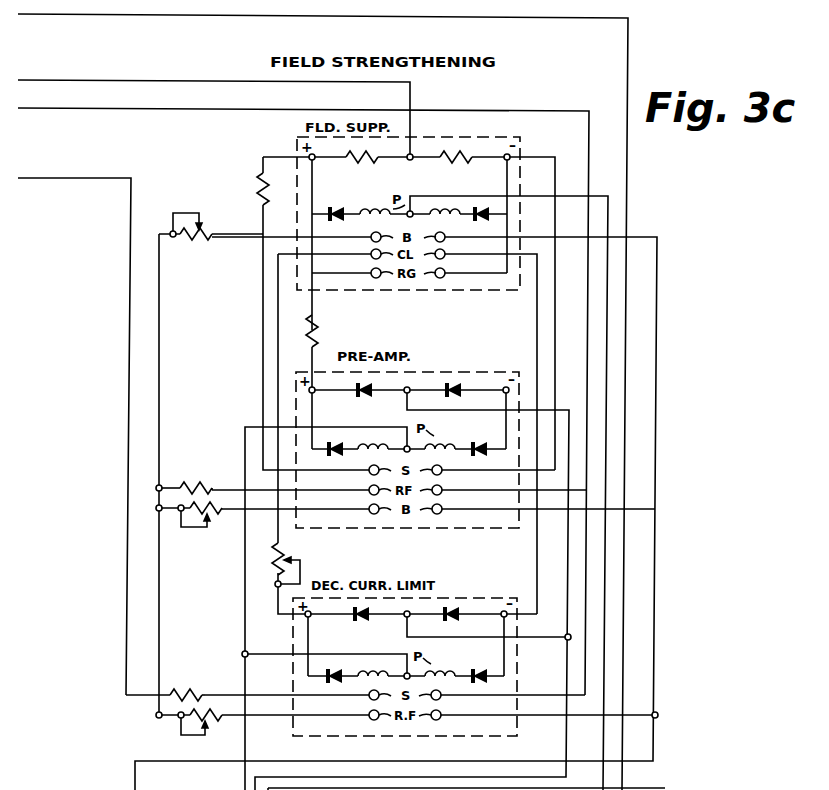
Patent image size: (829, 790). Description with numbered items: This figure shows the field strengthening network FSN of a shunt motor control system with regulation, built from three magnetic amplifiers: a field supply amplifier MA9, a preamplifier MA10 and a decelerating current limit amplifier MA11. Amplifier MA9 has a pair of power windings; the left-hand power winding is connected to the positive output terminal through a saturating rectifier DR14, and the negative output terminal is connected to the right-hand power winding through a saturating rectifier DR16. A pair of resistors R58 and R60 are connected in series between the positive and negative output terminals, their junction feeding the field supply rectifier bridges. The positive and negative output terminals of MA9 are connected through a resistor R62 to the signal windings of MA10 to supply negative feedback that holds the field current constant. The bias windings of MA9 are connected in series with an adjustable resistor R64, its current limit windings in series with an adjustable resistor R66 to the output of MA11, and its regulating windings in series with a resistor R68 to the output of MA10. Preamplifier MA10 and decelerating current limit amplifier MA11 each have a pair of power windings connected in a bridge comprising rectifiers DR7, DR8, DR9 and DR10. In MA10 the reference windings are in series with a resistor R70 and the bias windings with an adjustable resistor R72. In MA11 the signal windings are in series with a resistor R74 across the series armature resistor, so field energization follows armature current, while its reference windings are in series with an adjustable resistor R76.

The resistor R58 is at (357, 166).
The resistor R60 is at (455, 166).
The resistor R62 is at (255, 191).
The adjustable resistor R64 is at (197, 243).
The adjustable resistor R66 is at (295, 551).
The resistor R68 is at (319, 331).
The resistor R70 is at (202, 471).
The adjustable resistor R72 is at (213, 530).
The resistor R74 is at (182, 672).
The adjustable resistor R76 is at (211, 737).
The saturating rectifier DR14 is at (347, 200).
The saturating rectifier DR16 is at (487, 220).
The rectifier DR9 is at (362, 398).
The rectifier DR8 is at (453, 398).
The rectifier DR7 is at (338, 443).
The rectifier DR10 is at (488, 431).
The field supply amplifier MA9 is at (441, 142).
The preamplifier MA10 is at (441, 371).
The decelerating current limit amplifier MA11 is at (459, 597).
The field strengthening network FSN is at (481, 104).